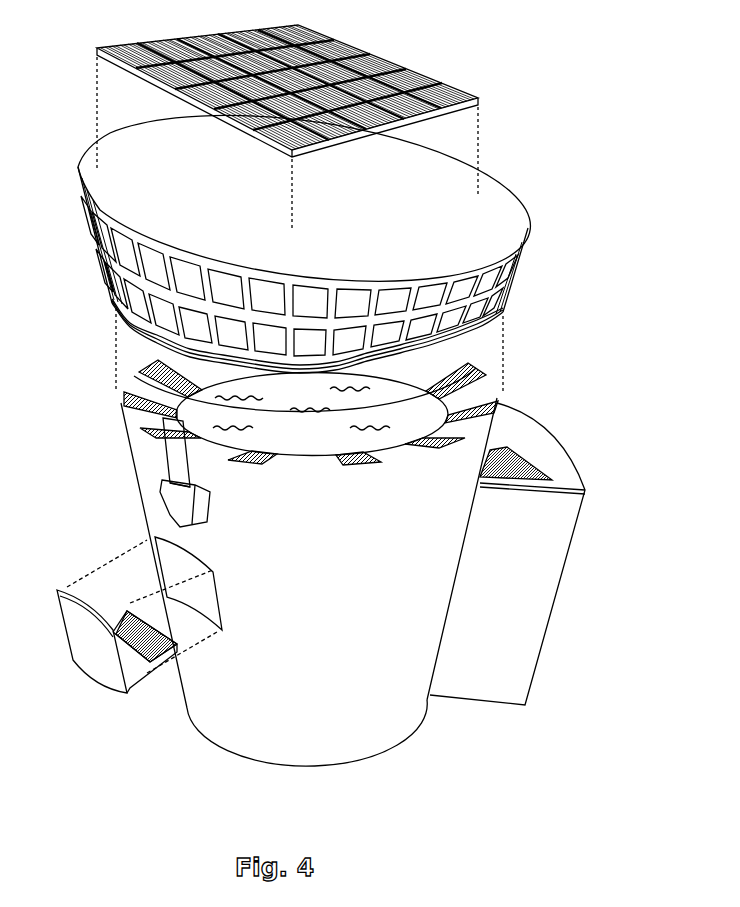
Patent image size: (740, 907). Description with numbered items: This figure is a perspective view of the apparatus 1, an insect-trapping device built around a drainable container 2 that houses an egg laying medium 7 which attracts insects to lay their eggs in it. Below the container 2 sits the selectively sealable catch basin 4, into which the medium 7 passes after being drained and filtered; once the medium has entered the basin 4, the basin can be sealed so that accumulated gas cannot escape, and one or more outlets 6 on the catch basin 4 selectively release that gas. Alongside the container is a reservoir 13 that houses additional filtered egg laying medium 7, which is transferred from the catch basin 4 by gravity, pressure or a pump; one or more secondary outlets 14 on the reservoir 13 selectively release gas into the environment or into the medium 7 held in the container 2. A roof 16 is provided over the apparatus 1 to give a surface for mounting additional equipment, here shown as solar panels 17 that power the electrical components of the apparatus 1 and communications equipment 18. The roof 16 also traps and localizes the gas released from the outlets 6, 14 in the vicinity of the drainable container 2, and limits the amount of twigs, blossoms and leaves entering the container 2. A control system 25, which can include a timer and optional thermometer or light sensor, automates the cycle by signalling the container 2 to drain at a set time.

The apparatus 1 is at (108, 436).
The drainable container 2 is at (451, 383).
The selectively sealable catch basin 4 is at (356, 725).
The outlets 6 is at (110, 398).
The egg laying medium 7 is at (324, 439).
The reservoir 13 is at (600, 502).
The secondary outlets 14 is at (548, 450).
The roof 16 is at (545, 227).
The solar panels 17 is at (490, 98).
The communications equipment 18 is at (228, 513).
The control system 25 is at (100, 592).